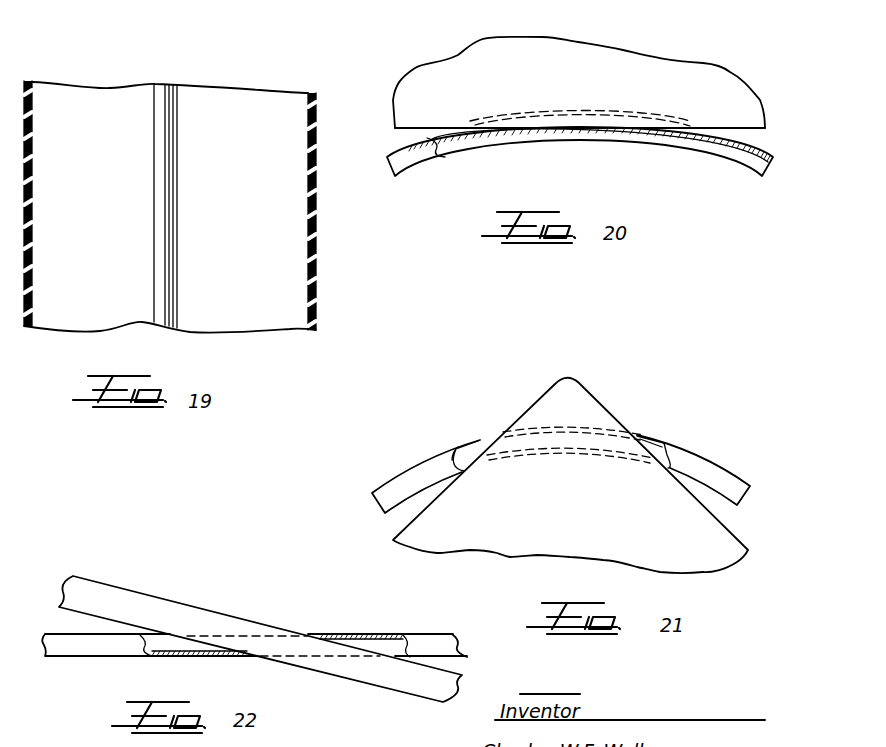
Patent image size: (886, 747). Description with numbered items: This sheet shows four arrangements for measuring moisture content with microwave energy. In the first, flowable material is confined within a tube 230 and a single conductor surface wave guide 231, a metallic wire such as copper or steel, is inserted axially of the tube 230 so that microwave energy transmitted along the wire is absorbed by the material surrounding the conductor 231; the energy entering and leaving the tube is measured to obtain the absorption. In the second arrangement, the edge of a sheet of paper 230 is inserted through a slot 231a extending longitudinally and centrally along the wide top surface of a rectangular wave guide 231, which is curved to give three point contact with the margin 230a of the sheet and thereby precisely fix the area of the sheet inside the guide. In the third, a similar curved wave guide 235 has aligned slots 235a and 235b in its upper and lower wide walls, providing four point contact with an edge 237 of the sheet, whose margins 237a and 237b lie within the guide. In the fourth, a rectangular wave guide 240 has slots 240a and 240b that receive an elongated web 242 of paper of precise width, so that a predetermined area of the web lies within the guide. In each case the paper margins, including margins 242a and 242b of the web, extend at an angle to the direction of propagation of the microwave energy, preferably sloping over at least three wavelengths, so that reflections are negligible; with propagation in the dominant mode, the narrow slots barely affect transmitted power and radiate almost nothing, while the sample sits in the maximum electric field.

In FIG. 19, the tube / sheet of paper 230 is at (322, 94).
In FIG. 20, the tube / sheet of paper 230 is at (607, 60).
In FIG. 20, the margin of the sheet 230a is at (406, 130).
In FIG. 19, the single conductor wave guide / rectangular wave guide 231 is at (180, 162).
In FIG. 20, the single conductor wave guide / rectangular wave guide 231 is at (738, 168).
In FIG. 20, the slot 231a is at (641, 112).
In FIG. 21, the curved wave guide 235 is at (693, 462).
In FIG. 21, the slot 235a is at (580, 423).
In FIG. 21, the slot 235b is at (597, 455).
In FIG. 21, the edge of a sheet of paper 237 is at (563, 380).
In FIG. 21, the margin of the paper 237a is at (482, 467).
In FIG. 21, the margin of the paper 237b is at (653, 437).
In FIG. 22, the rectangular wave guide 240 is at (53, 657).
In FIG. 22, the slot 240a is at (247, 633).
In FIG. 22, the slot 240b is at (313, 658).
In FIG. 22, the elongated web 242 is at (103, 593).
In FIG. 22, the margin of the web 242a is at (207, 657).
In FIG. 22, the margin of the web 242b is at (365, 647).